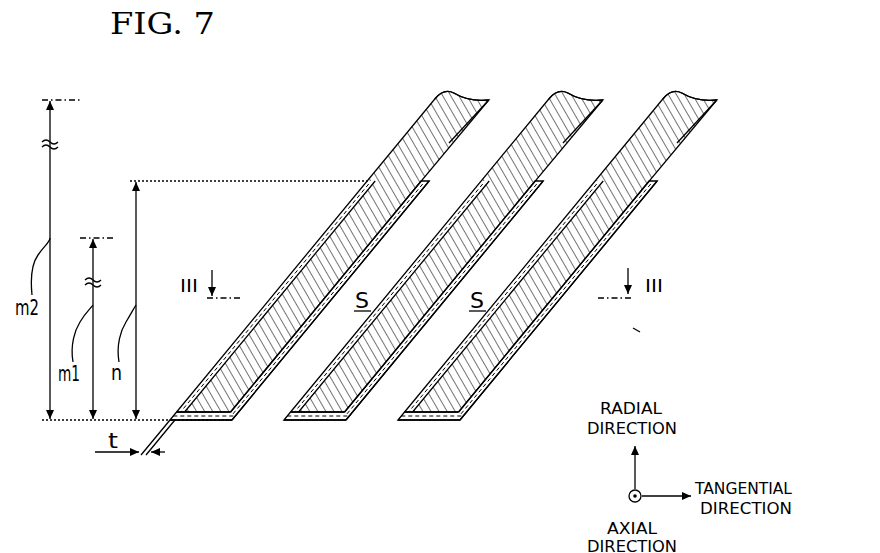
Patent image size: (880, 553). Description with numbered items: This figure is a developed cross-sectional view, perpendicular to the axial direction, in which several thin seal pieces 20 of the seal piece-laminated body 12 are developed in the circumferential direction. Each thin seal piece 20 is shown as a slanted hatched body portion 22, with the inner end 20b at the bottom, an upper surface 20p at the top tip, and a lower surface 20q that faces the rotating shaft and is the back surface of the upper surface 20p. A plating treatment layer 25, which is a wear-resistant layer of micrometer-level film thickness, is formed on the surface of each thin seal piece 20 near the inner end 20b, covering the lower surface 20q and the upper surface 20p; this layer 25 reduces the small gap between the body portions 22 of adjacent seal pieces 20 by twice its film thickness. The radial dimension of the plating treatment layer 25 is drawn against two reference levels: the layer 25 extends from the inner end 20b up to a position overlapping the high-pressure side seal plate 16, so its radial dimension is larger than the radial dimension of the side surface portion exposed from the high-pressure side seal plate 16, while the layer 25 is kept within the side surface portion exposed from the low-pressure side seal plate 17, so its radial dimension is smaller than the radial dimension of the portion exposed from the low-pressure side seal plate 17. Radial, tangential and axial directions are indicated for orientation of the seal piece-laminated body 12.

The seal piece-laminated body 12 is at (634, 329).
The high-pressure side seal plate 16 is at (103, 240).
The low-pressure side seal plate 17 is at (81, 101).
The thin seal piece 20 is at (204, 432).
The body portion 22 is at (429, 312).
The upper surface 20p is at (434, 100).
The lower surface 20q is at (449, 143).
The inner end 20b is at (183, 423).
The plating treatment layer 25 is at (224, 423).